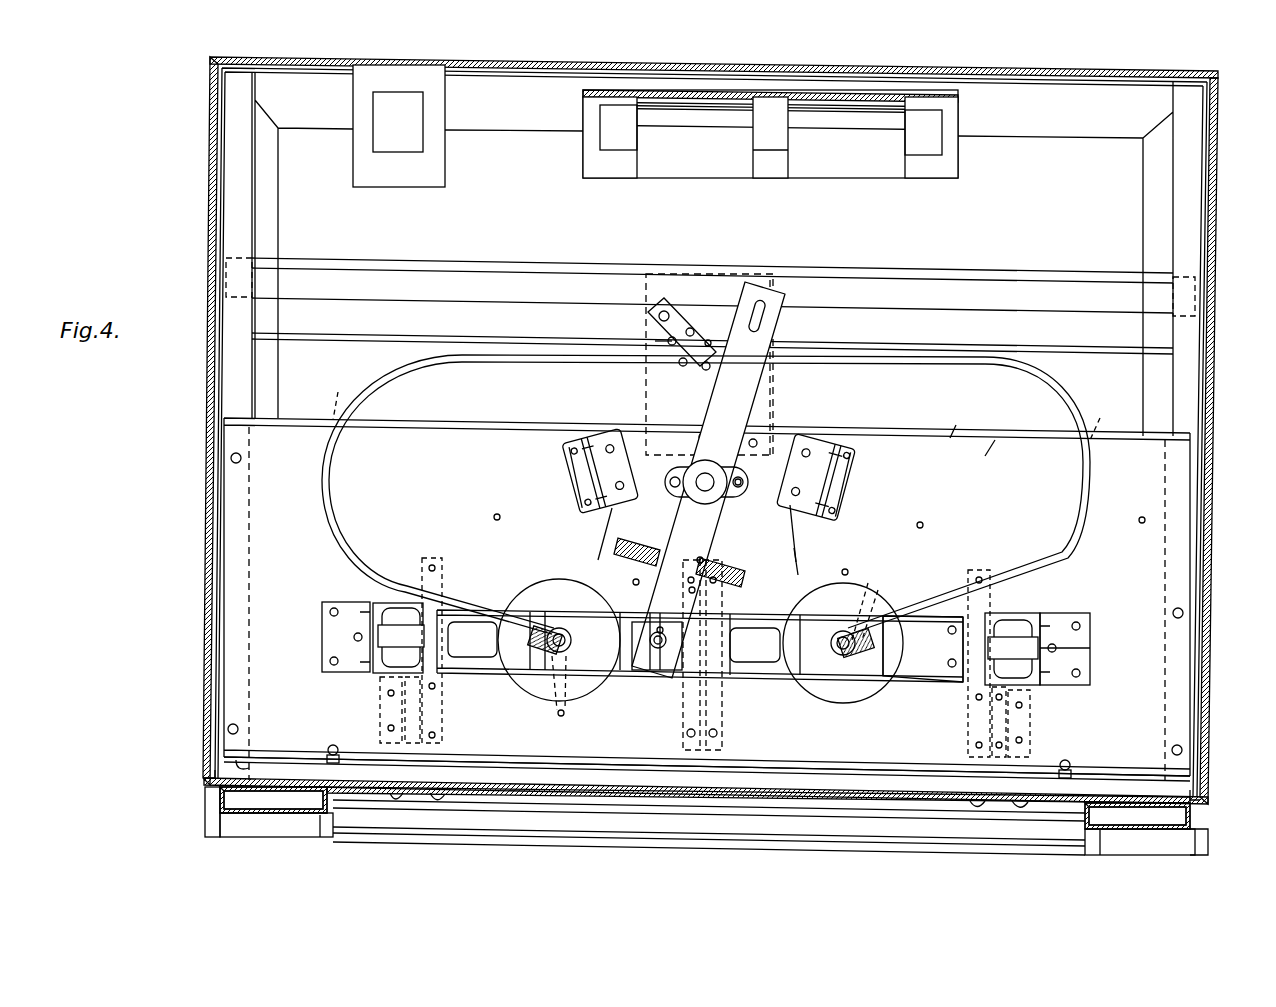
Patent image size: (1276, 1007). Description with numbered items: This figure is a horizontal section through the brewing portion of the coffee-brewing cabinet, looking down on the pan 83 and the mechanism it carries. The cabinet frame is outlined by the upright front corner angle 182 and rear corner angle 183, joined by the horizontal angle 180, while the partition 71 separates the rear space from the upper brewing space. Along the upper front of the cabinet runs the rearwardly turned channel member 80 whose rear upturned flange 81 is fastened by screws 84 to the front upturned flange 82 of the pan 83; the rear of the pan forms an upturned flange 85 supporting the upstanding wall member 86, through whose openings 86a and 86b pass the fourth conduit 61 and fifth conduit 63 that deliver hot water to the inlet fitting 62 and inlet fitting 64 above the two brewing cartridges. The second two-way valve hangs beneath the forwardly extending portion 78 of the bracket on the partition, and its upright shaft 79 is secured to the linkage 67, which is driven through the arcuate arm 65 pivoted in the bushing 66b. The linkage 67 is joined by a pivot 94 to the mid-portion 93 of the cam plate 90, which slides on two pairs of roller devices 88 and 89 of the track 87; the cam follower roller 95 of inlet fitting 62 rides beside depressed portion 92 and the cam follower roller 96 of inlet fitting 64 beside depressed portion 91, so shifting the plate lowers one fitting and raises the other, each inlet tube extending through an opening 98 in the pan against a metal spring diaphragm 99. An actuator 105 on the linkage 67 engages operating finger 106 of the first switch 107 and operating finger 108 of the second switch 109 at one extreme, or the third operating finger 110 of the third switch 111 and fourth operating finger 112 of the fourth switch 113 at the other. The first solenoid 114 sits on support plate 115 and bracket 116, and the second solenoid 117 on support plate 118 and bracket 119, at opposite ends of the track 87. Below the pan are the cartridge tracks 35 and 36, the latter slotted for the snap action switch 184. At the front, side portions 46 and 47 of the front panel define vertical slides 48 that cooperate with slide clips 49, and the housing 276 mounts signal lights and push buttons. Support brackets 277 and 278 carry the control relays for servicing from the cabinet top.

The rear corner angle 183 is at (1218, 84).
The horizontal angle 180 is at (1182, 205).
The support bracket 278 is at (440, 108).
The support bracket 277 is at (950, 112).
The partition 71 is at (508, 266).
The pan 83 is at (256, 680).
The forwardly extending portion 78 is at (648, 393).
The upright shaft 79 is at (705, 370).
The linkage 67 is at (745, 398).
The arcuate arm 65 is at (698, 490).
The bushing 66b is at (742, 490).
The first switch 107 is at (588, 466).
The second switch 109 is at (575, 476).
The operating finger 106 is at (608, 520).
The operating finger 108 is at (614, 540).
The third switch 111 is at (835, 468).
The fourth switch 113 is at (848, 484).
The third operating finger 110 is at (800, 532).
The fourth operating finger 112 is at (802, 556).
The actuator 105 is at (745, 566).
The fourth conduit 61 is at (382, 372).
The fifth conduit 63 is at (1078, 552).
The opening 86a is at (333, 395).
The upstanding wall member 86 is at (956, 417).
The upturned flange 85 is at (984, 455).
The opening 86b is at (1113, 416).
The cam plate 90 is at (748, 620).
The depressed portion 91 is at (745, 665).
The track 87 is at (925, 670).
The cam follower roller 95 is at (540, 615).
The mid-portion 93 is at (676, 672).
The pivot 94 is at (656, 630).
The inlet fitting 62 is at (568, 664).
The depressed portion 92 is at (556, 578).
The metal spring diaphragm 99 is at (580, 590).
The opening 98 is at (525, 688).
The roller devices 88 is at (559, 699).
The inlet fitting 64 is at (835, 660).
The roller devices 89 is at (843, 631).
The cam follower roller 96 is at (818, 625).
The track 35 is at (724, 742).
The support plate 115 is at (322, 628).
The first solenoid 114 is at (395, 626).
The bracket 116 is at (348, 666).
The second solenoid 117 is at (1012, 645).
The support plate 118 is at (1086, 638).
The bracket 119 is at (1080, 665).
The track 36 is at (968, 738).
The snap action switch 184 is at (1030, 717).
The front upturned flange 82 is at (302, 752).
The rear upturned flange 81 is at (274, 750).
The screws 84 is at (336, 748).
The channel member 80 is at (660, 795).
The slide clips 49 is at (440, 790).
The side portion 46 is at (215, 815).
The housing 276 is at (284, 802).
The vertical slides 48 is at (322, 828).
The side portion 47 is at (1190, 856).
The front corner angle 182 is at (203, 776).